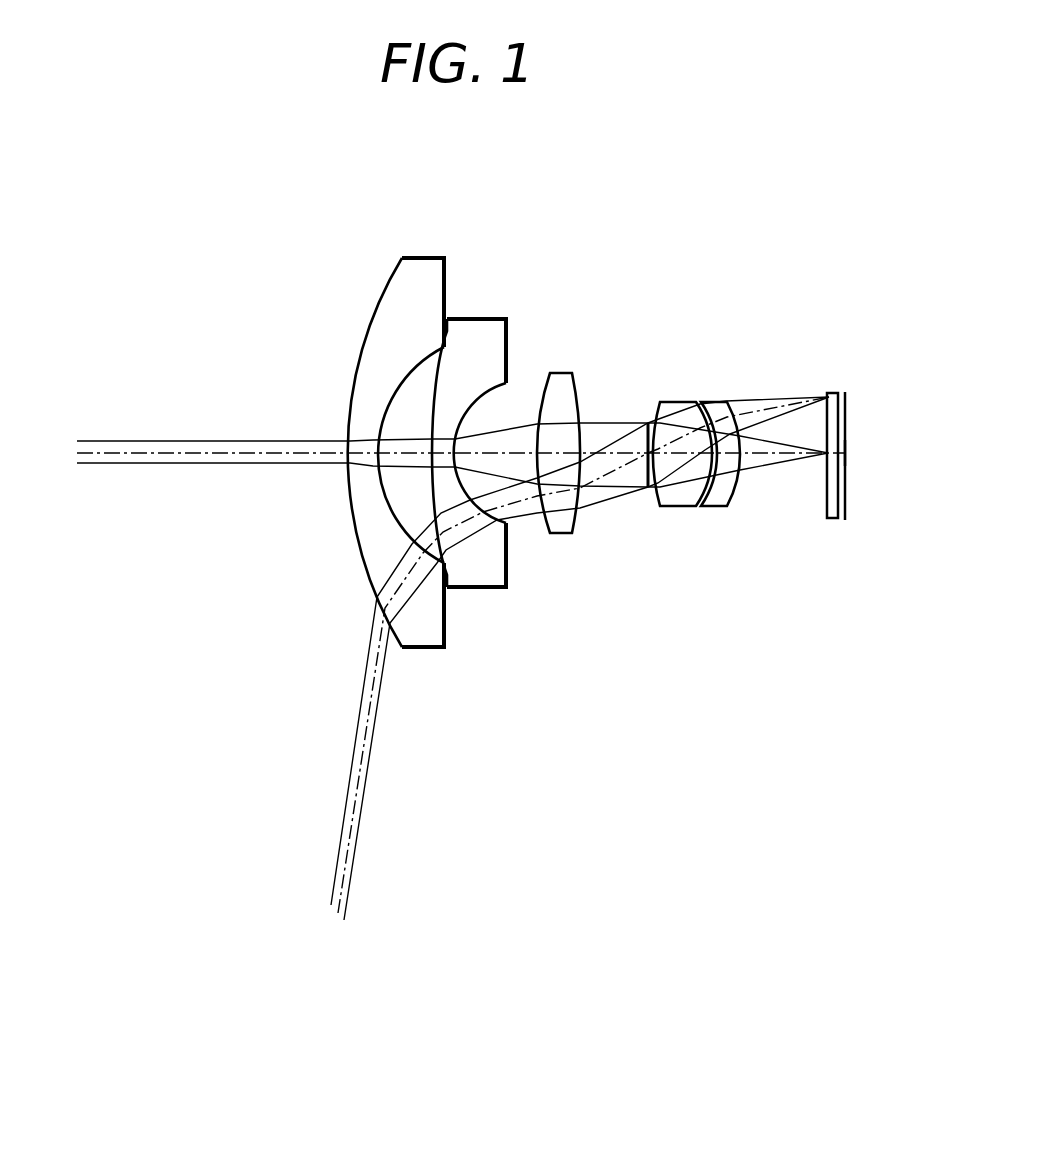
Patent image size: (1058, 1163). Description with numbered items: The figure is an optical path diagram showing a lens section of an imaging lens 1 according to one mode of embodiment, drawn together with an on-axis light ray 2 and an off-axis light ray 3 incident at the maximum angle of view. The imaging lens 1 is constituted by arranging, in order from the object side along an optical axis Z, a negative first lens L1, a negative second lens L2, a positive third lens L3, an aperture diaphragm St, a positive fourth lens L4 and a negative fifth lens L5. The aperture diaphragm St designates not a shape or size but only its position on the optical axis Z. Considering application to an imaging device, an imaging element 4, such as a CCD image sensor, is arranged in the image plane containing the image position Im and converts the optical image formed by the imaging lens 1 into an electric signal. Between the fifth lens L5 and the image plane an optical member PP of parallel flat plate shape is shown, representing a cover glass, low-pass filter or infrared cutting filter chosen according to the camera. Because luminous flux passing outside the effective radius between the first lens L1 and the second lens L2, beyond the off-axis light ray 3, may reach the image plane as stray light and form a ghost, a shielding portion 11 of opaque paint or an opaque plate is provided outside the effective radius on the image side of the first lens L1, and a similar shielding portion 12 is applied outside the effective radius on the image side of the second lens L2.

The imaging lens 1 is at (743, 207).
The on-axis light ray 2 is at (66, 437).
The off-axis light ray 3 is at (354, 922).
The imaging element 4 is at (846, 420).
The shielding portion 11 is at (447, 630).
The shielding portion 12 is at (508, 571).
The first lens L1 is at (429, 424).
The second lens L2 is at (501, 394).
The third lens L3 is at (563, 373).
The fourth lens L4 is at (678, 402).
The fifth lens L5 is at (717, 402).
The aperture diaphragm St is at (636, 428).
The optical member PP is at (831, 393).
The image position Im is at (846, 457).
The optical axis Z is at (108, 451).